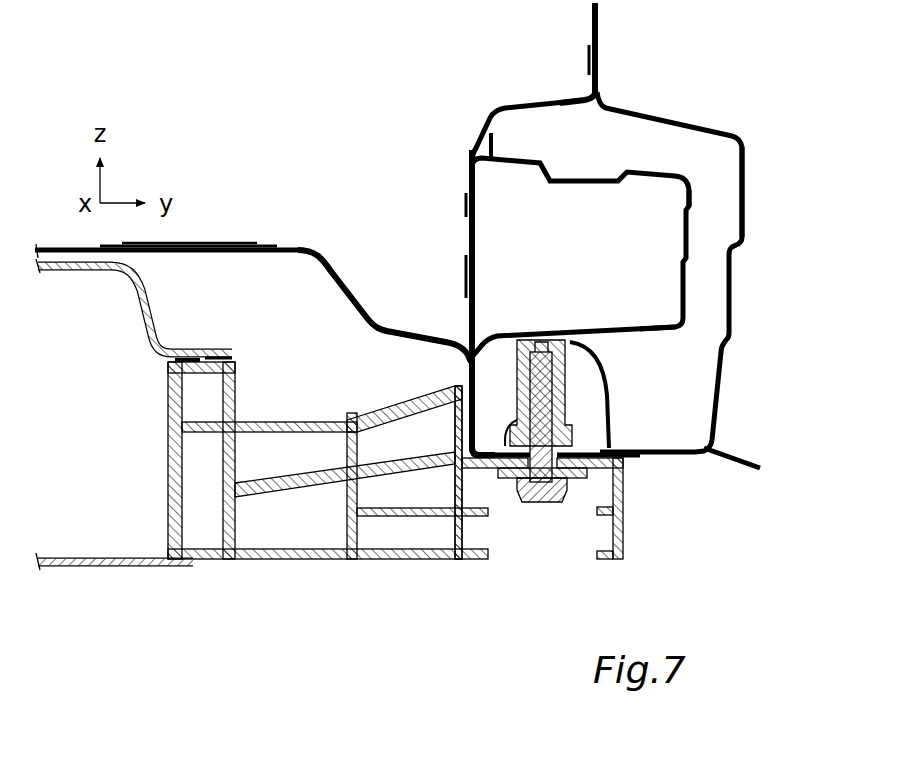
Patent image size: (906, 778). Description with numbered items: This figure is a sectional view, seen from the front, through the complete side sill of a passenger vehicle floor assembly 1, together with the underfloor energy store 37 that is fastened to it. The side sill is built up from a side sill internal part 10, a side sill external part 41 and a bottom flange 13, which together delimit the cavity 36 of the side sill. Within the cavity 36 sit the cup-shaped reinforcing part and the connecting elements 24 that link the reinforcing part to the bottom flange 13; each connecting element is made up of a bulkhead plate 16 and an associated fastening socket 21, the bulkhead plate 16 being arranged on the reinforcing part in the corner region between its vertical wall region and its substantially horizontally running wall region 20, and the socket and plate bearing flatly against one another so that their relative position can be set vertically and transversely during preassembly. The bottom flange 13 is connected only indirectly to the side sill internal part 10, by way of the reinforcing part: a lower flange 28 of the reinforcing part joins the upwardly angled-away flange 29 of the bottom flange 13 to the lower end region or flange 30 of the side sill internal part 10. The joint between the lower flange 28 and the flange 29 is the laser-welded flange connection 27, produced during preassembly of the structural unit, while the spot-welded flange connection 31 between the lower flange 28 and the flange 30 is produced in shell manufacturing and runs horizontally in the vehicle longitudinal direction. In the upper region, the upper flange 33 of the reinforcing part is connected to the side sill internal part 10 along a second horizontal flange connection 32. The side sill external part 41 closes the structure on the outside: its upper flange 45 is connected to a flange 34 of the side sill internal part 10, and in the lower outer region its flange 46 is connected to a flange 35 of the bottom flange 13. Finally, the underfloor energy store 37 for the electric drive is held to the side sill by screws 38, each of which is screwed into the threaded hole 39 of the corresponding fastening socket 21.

The floor assembly 1 is at (253, 215).
The side sill internal part 10 is at (467, 237).
The bottom flange 13 is at (672, 458).
The bulkhead plate 16 is at (578, 340).
The substantially horizontally running wall region 20 is at (615, 323).
The fastening socket 21 is at (570, 432).
The connecting elements 24 is at (615, 389).
The flange connection 27 is at (470, 447).
The lower flange 28 is at (467, 368).
The upwardly angled-away flange 29 is at (485, 436).
The lower end region or flange 30 is at (467, 423).
The flange connection 31 is at (475, 406).
The flange connection 32 is at (466, 178).
The upper flange 33 is at (477, 197).
The flange 34 is at (590, 72).
The flange 35 is at (743, 470).
The cavity 36 is at (735, 205).
The underfloor energy store 37 is at (222, 581).
The screws 38 is at (552, 503).
The threaded hole 39 is at (545, 373).
The side sill external part 41 is at (677, 124).
The upper flange 45 is at (598, 32).
The flange 46 is at (728, 447).